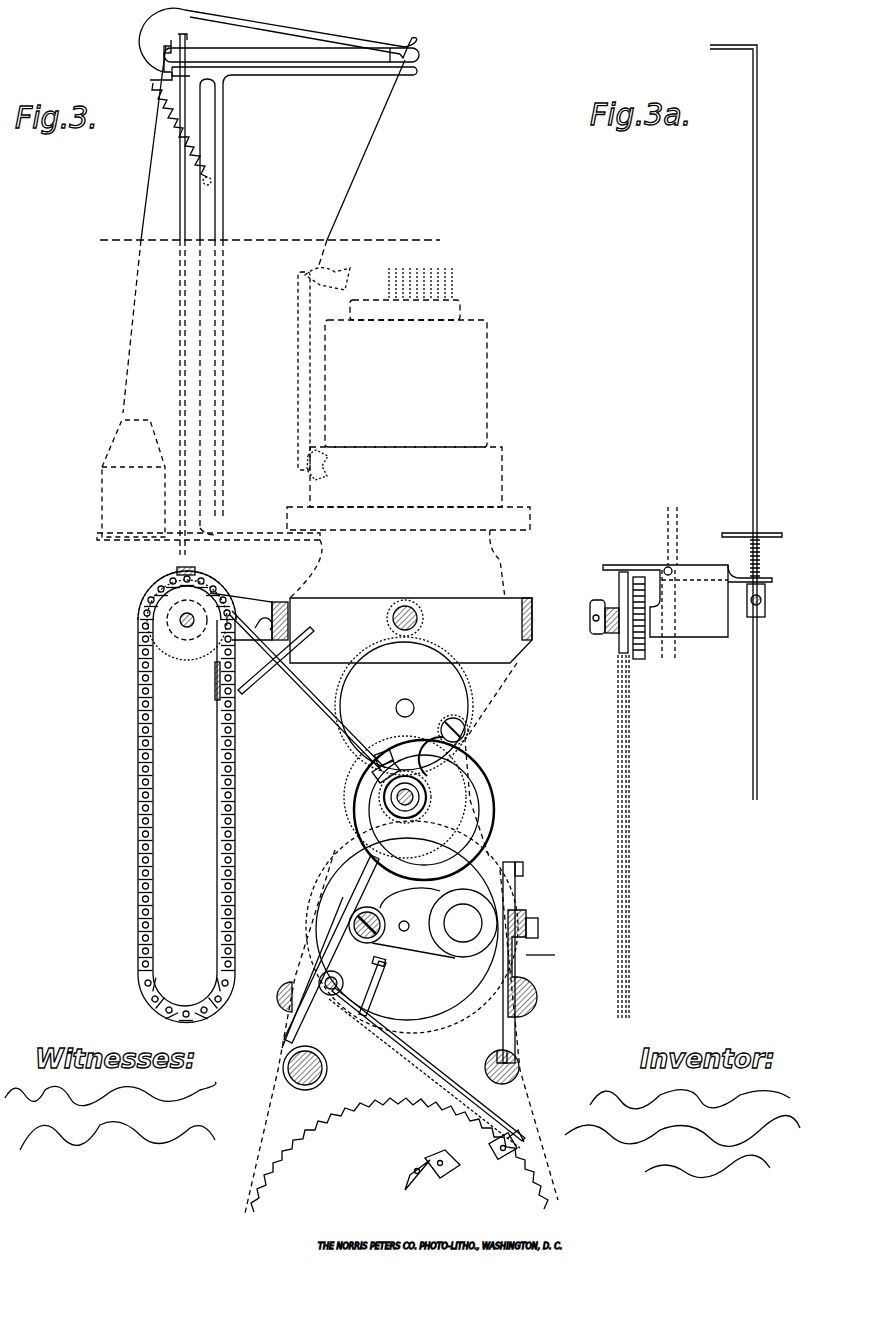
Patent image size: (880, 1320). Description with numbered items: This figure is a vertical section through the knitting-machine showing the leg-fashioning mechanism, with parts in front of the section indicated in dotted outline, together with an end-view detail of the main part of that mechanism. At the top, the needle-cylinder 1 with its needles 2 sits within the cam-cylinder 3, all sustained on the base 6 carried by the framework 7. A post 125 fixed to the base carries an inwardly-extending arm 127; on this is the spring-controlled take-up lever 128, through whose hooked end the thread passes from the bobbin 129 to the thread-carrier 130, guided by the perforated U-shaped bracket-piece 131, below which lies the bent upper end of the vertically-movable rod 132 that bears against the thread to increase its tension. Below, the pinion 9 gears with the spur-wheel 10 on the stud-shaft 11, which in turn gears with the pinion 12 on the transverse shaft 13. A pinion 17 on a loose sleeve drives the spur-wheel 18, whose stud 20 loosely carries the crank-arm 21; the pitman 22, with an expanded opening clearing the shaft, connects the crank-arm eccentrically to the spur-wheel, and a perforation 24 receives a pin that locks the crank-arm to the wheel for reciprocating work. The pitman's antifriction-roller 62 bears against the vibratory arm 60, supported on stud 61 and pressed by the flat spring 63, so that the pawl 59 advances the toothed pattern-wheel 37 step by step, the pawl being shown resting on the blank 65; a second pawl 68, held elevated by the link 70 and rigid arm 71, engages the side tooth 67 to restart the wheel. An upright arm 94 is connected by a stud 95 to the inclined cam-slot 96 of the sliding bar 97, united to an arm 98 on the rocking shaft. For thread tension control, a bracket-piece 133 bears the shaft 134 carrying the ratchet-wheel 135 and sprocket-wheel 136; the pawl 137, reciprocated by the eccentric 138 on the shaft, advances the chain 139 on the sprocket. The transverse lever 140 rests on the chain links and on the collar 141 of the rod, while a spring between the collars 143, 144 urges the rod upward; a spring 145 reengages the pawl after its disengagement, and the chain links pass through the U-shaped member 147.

In FIG. 3, the needle-cylinder 1 is at (462, 305).
In FIG. 3, the needles 2 is at (452, 272).
In FIG. 3, the cam-cylinder 3 is at (492, 478).
In FIG. 3, the base 6 is at (530, 520).
In FIG. 3, the framework 7 is at (527, 598).
In FIG. 3, the pinion 9 is at (415, 606).
In FIG. 3, the spur-wheel 10 is at (450, 655).
In FIG. 3, the stud-shaft 11 is at (407, 700).
In FIG. 3, the pinion 12 is at (425, 783).
In FIG. 3, the transverse shaft 13 is at (415, 797).
In FIG. 3, the pinion 17 is at (430, 805).
In FIG. 3, the spur-wheel 18 is at (318, 870).
In FIG. 3, the stud 20 is at (470, 915).
In FIG. 3, the crank-arm 21 is at (428, 945).
In FIG. 3, the pitman 22 is at (358, 790).
In FIG. 3, the perforation 24 is at (405, 920).
In FIG. 3, the pattern-wheel 37 is at (320, 1140).
In FIG. 3, the pawl 59 is at (508, 1135).
In FIG. 3, the vibratory arm 60 is at (288, 1012).
In FIG. 3, the stud 61 is at (327, 1066).
In FIG. 3, the antifriction-roller 62 is at (352, 918).
In FIG. 3, the flat spring 63 is at (335, 945).
In FIG. 3, the blank 65 is at (492, 1142).
In FIG. 3, the tooth 67 is at (500, 1160).
In FIG. 3, the pawl 68 is at (425, 1068).
In FIG. 3, the link 70 is at (378, 985).
In FIG. 3, the rigid arm 71 is at (355, 960).
In FIG. 3, the upright arm 94 is at (520, 998).
In FIG. 3, the stud 95 is at (540, 928).
In FIG. 3, the cam-slot 96 is at (500, 1045).
In FIG. 3, the sliding bar 97 is at (540, 960).
In FIG. 3, the arm 98 is at (512, 865).
In FIG. 3, the post 125 is at (223, 188).
In FIG. 3, the arm 127 is at (316, 70).
In FIG. 3, the take-up lever 128 is at (330, 25).
In FIG. 3, the bobbin 129 is at (102, 494).
In FIG. 3, the thread-carrier 130 is at (326, 270).
In FIG. 3, the U-shaped bracket-piece 131 is at (163, 48).
In FIG. 3, the vertically-movable rod 132 is at (178, 163).
In FIG. 3A, the vertically-movable rod 132 is at (752, 182).
In FIG. 3, the bracket-piece 133 is at (250, 593).
In FIG. 3A, the bracket-piece 133 is at (700, 637).
In FIG. 3, the shaft 134 is at (180, 617).
In FIG. 3, the ratchet-wheel 135 is at (187, 662).
In FIG. 3A, the ratchet-wheel 135 is at (640, 659).
In FIG. 3, the sprocket-wheel 136 is at (140, 650).
In FIG. 3A, the sprocket-wheel 136 is at (620, 645).
In FIG. 3, the pawl 137 is at (322, 724).
In FIG. 3, the eccentric 138 is at (385, 800).
In FIG. 3, the chain 139 is at (138, 755).
In FIG. 3A, the chain 139 is at (628, 730).
In FIG. 3, the transverse lever 140 is at (177, 568).
In FIG. 3A, the transverse lever 140 is at (623, 572).
In FIG. 3A, the collar 141 is at (765, 606).
In FIG. 3, the collar 143 is at (260, 680).
In FIG. 3, the collar 144 is at (380, 752).
In FIG. 3, the spring 145 is at (290, 608).
In FIG. 3, the U-shaped member 147 is at (215, 700).